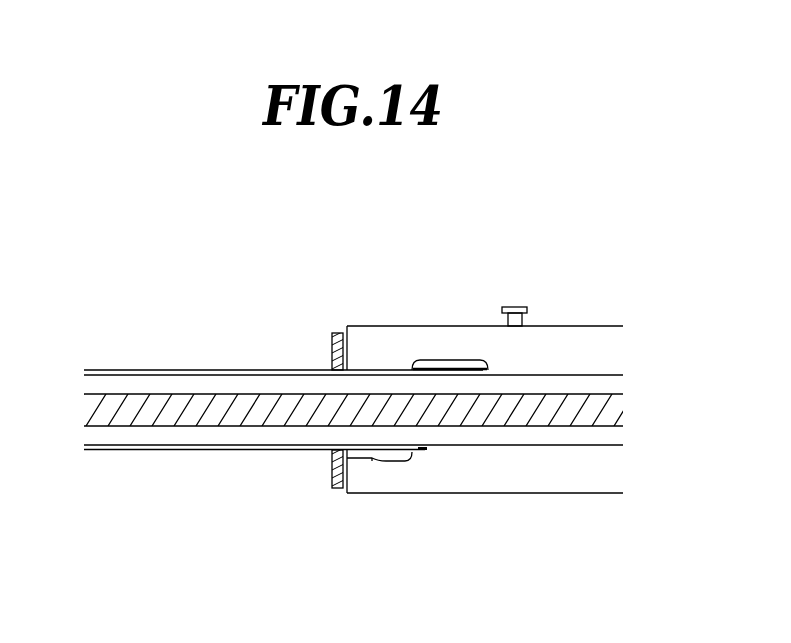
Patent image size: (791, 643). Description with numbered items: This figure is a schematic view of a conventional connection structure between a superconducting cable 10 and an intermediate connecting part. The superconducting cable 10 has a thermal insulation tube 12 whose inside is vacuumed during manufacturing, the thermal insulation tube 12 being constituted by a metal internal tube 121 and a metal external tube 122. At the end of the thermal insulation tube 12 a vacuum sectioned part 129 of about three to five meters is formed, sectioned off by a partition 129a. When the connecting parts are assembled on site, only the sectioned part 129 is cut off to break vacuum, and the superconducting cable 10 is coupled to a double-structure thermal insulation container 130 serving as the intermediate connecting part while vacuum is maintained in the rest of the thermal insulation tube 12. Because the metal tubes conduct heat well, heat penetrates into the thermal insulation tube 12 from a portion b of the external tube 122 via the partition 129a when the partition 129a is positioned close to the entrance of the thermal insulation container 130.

The superconducting cable 10 is at (159, 252).
The thermal insulation tube 12 is at (315, 519).
The internal tube 121 is at (213, 445).
The external tube 122 is at (282, 449).
The vacuum sectioned part 129 is at (452, 360).
The partition 129a is at (423, 448).
The thermal insulation container 130 is at (560, 326).
The portion of the external tube b is at (372, 461).